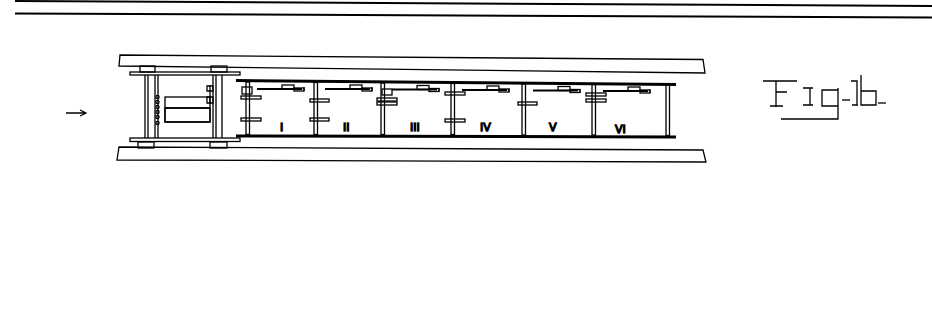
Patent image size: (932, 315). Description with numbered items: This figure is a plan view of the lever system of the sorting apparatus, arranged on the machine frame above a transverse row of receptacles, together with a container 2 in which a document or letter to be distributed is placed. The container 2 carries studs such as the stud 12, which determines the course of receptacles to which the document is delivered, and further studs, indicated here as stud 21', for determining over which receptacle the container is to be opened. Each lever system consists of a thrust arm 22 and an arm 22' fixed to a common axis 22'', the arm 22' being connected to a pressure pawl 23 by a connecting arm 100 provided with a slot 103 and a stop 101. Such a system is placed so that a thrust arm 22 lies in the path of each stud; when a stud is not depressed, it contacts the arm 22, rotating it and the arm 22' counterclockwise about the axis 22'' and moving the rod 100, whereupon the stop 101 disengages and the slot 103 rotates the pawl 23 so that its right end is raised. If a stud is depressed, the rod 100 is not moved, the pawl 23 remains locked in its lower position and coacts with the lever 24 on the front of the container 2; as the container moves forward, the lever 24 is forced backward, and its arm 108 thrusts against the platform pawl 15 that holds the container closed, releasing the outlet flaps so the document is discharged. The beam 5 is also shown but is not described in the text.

The beam 5 is at (177, 57).
The post 24 is at (211, 90).
The upper bracket block 22' is at (325, 67).
The plate 100 is at (266, 89).
The block 101 is at (283, 87).
The bump 103 is at (296, 87).
The stop 23 is at (302, 87).
The flange 22 is at (437, 107).
The divider post 22'' is at (457, 128).
The left post 21' is at (131, 106).
The bolt holes 12 is at (155, 114).
The box 108 is at (210, 100).
The lower box part 2 is at (182, 110).
The latch 15 is at (212, 100).